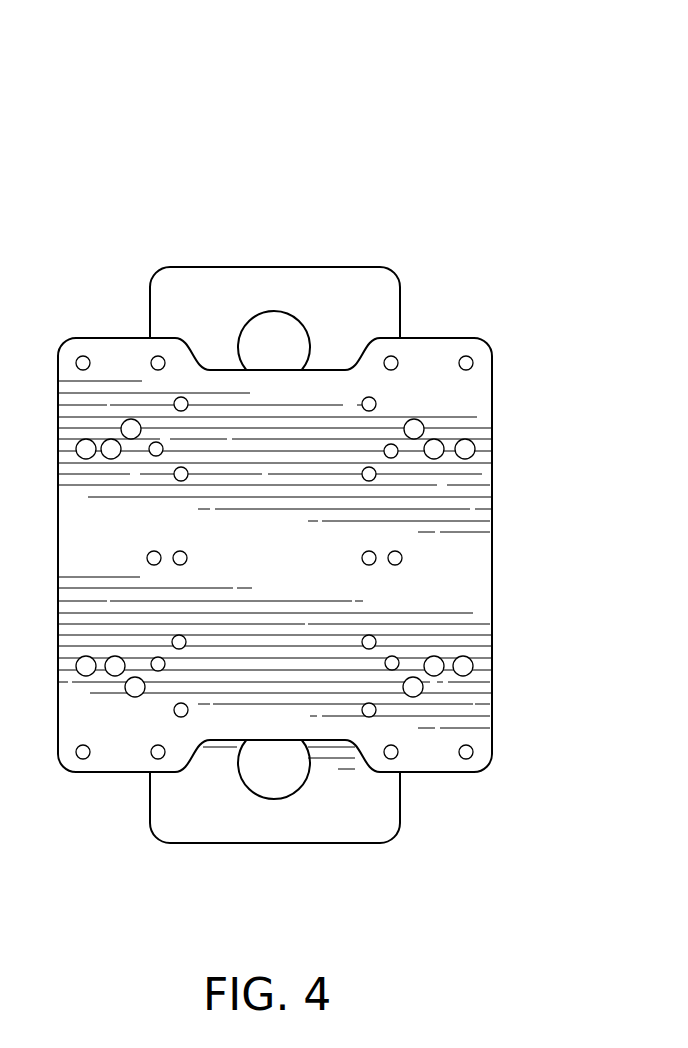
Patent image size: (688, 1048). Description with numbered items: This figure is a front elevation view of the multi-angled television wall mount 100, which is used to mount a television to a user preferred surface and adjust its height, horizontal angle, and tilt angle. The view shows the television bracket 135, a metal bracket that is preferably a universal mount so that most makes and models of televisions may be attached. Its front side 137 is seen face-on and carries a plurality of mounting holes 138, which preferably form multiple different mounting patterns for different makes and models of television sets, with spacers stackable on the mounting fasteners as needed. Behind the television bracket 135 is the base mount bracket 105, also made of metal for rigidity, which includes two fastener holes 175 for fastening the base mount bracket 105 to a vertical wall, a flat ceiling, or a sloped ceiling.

The multi-angled television wall mount 100 is at (497, 62).
The base mount bracket 105 is at (190, 267).
The television bracket 135 is at (450, 338).
The front side 137 is at (445, 583).
The mounting holes 138 is at (463, 448).
The fastener holes 175 is at (275, 330).